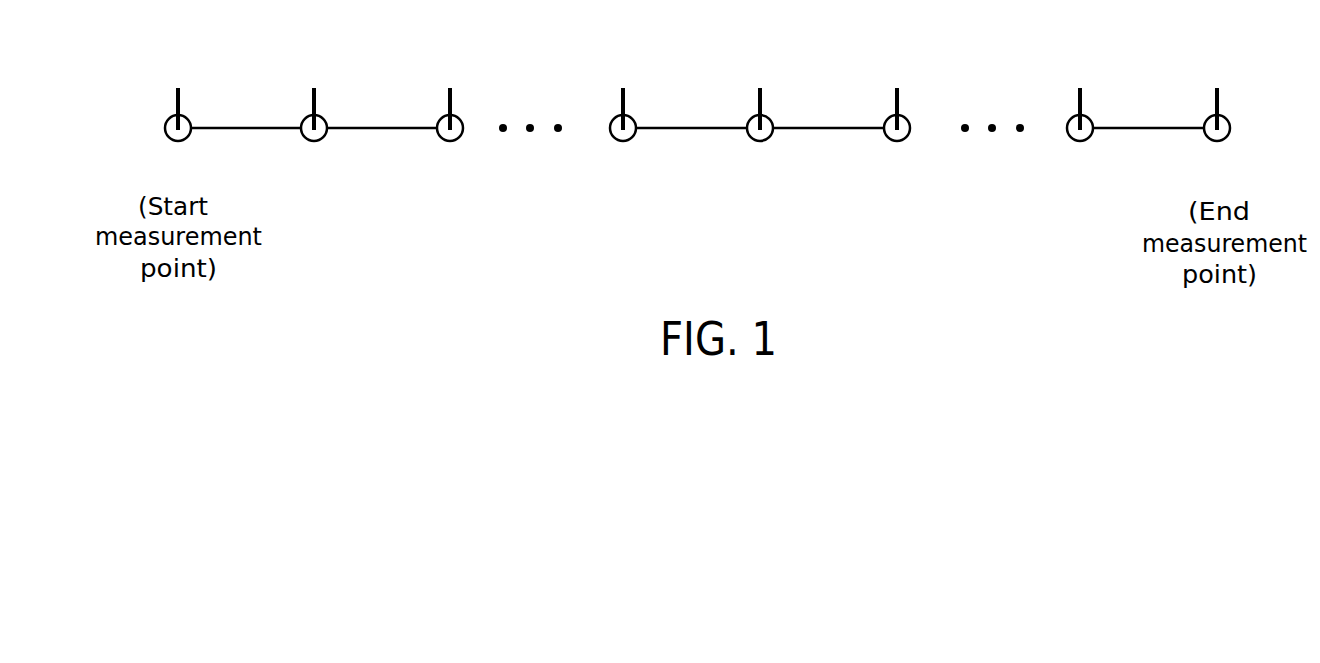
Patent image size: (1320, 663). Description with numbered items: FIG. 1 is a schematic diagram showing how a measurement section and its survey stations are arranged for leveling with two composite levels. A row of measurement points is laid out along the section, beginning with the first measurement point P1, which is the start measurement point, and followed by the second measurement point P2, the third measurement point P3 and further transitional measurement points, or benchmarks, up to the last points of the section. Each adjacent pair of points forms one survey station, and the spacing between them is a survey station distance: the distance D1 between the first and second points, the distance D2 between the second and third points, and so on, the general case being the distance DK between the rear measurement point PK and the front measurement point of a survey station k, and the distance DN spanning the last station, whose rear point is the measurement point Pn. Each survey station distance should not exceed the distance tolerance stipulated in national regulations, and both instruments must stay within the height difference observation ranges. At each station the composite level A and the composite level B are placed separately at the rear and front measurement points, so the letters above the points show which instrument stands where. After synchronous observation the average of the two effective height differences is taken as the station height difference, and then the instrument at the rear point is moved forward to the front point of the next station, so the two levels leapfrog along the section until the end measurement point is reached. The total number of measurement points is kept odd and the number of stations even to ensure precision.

The first measurement point P1 is at (181, 116).
The second measurement point P2 is at (317, 116).
The third measurement point P3 is at (453, 116).
The rear measurement point PK is at (626, 116).
The rear measurement point of last survey station Pn is at (1083, 116).
The survey station distance D1 is at (245, 109).
The survey station distance D2 is at (382, 109).
The survey station distance DK is at (691, 109).
The survey station distance DN is at (1148, 109).
The composite level A is at (178, 67).
The composite level B is at (314, 67).